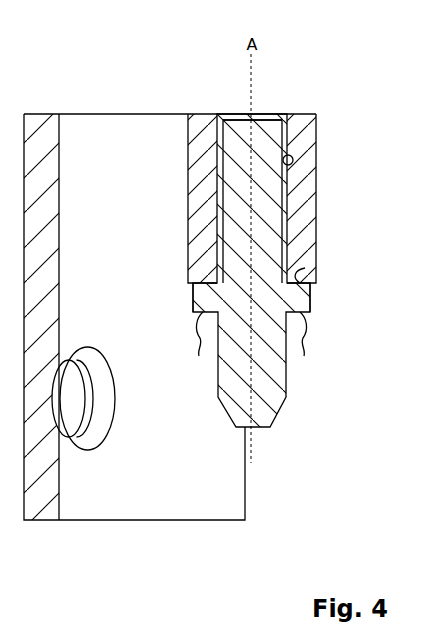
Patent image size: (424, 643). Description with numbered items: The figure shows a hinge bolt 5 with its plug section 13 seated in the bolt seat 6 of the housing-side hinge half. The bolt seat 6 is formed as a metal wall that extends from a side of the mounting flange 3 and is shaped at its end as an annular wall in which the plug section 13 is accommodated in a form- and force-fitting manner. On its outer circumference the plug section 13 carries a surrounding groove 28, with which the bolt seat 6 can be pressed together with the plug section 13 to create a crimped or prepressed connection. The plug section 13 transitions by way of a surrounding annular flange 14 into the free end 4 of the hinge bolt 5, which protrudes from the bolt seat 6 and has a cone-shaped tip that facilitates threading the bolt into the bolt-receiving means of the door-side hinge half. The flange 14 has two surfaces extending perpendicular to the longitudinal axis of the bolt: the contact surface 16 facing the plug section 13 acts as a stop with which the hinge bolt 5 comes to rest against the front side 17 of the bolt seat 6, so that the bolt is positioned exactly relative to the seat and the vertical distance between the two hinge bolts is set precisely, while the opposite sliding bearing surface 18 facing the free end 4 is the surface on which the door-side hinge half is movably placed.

The mounting flange 3 is at (163, 502).
The free end 4 is at (286, 408).
The hinge bolt 5 is at (331, 358).
The bolt seat 6 is at (305, 195).
The plug section 13 is at (276, 130).
The surrounding flange 14 is at (193, 298).
The contact surface 16 is at (300, 270).
The front side 17 is at (312, 290).
The sliding bearing surface 18 is at (253, 343).
The surrounding groove 28 is at (293, 162).